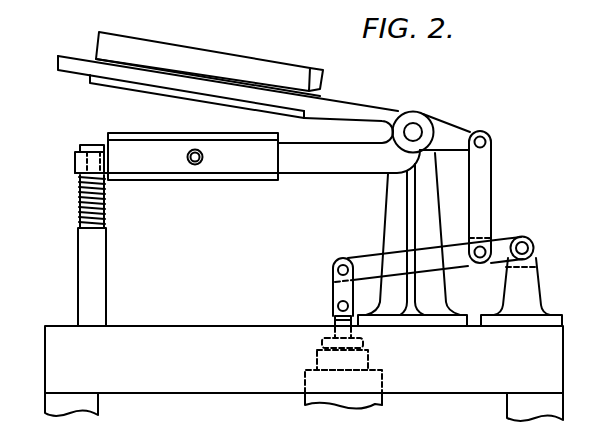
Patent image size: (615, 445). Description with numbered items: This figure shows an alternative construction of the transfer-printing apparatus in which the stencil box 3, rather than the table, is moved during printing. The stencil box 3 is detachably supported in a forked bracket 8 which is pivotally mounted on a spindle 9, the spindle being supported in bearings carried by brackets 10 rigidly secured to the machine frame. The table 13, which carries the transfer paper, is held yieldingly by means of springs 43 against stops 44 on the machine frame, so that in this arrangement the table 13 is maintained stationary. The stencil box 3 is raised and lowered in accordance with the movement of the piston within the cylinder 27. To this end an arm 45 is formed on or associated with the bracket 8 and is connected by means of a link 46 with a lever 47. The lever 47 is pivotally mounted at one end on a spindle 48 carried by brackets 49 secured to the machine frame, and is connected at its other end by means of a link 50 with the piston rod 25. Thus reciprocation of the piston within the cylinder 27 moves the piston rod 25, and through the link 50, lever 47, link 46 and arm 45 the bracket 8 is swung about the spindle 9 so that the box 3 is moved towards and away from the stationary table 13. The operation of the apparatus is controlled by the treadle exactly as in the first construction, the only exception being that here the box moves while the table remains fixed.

The stencil box 3 is at (195, 60).
The forked bracket 8 is at (357, 107).
The spindle 9 is at (413, 132).
The brackets 10 is at (393, 197).
The table 13 is at (262, 160).
The piston rod 25 is at (333, 330).
The cylinder 27 is at (318, 402).
The springs 43 is at (80, 202).
The stops 44 is at (90, 273).
The arm 45 is at (455, 133).
The link 46 is at (486, 183).
The lever 47 is at (453, 260).
The spindle 48 is at (522, 248).
The brackets 49 is at (535, 281).
The link 50 is at (340, 287).